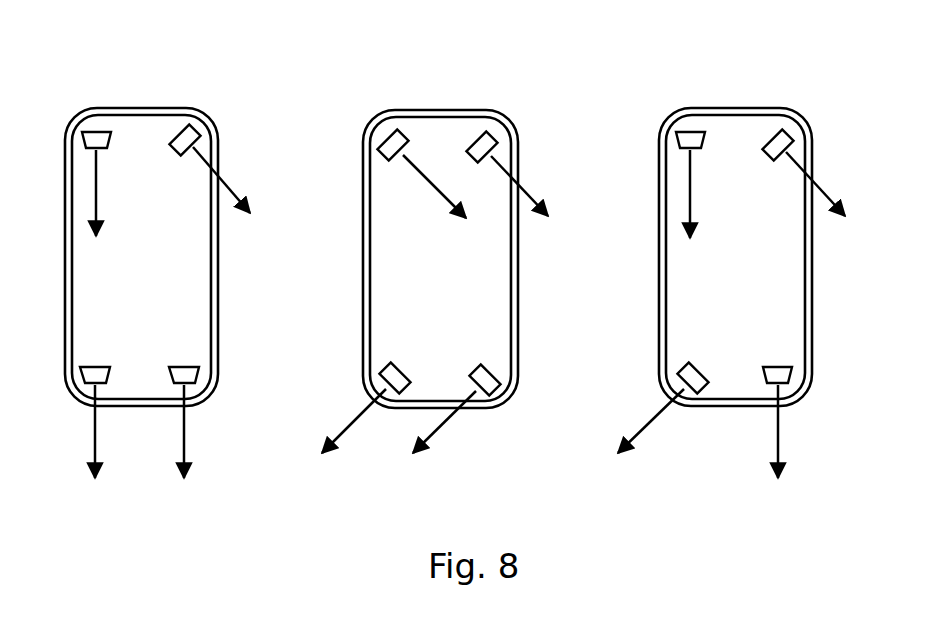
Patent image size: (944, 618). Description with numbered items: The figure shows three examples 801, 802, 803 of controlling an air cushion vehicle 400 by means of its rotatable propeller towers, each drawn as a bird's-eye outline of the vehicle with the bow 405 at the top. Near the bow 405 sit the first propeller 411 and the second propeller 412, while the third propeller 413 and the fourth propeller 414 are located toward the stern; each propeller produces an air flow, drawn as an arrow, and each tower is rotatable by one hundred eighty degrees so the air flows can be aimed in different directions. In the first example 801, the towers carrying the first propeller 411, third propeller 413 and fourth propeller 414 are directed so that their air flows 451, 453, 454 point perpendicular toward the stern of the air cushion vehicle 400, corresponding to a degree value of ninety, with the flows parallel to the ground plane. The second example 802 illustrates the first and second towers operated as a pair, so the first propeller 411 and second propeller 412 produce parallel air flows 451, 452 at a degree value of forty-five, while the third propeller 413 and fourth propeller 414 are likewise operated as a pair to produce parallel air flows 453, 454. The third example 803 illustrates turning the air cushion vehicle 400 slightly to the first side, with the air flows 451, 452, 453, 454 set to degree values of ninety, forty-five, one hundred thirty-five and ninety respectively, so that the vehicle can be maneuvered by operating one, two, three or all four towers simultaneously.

The air cushion vehicle 400 is at (466, 269).
The bow 405 is at (127, 108).
The first propeller 411 is at (76, 128).
The second propeller 412 is at (183, 128).
The third propeller 413 is at (97, 367).
The fourth propeller 414 is at (183, 366).
The air flow 451 is at (100, 158).
The air flow 452 is at (234, 202).
The air flow 453 is at (95, 482).
The air flow 454 is at (184, 482).
The first example 801 is at (221, 271).
The second example 802 is at (520, 280).
The third example 803 is at (813, 387).